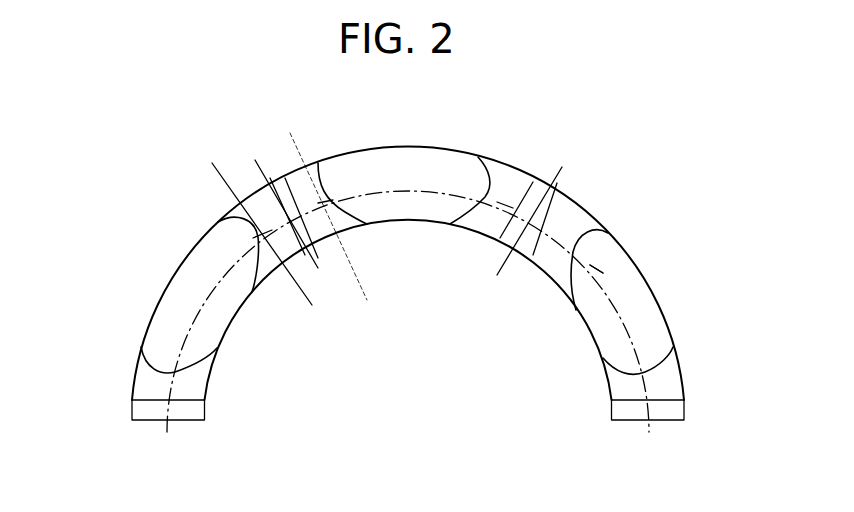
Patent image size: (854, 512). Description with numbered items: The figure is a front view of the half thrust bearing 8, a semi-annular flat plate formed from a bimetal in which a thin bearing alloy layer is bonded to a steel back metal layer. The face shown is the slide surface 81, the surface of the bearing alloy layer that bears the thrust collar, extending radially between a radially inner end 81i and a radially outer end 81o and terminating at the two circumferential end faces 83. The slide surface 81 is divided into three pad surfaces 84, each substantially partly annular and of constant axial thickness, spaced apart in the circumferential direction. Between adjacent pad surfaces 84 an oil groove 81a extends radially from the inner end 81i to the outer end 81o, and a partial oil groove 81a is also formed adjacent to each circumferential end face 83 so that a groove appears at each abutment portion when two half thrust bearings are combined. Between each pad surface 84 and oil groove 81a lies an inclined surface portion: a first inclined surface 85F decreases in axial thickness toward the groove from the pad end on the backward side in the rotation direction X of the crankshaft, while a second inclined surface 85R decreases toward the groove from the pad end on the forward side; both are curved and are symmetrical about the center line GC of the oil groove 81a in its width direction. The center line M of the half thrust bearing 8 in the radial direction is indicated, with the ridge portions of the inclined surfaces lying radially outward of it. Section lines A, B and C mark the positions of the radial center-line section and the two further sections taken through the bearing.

The half thrust bearing 8 is at (648, 125).
The slide surface 81 is at (421, 307).
The radially outer end 81o is at (650, 286).
The radially inner end 81i is at (585, 320).
The oil groove 81a is at (345, 255).
The circumferential end face 83 is at (146, 422).
The pad surface 84 is at (397, 270).
The first inclined surface 85F is at (320, 168).
The second inclined surface 85R is at (255, 208).
The center line of the oil groove GC is at (255, 160).
The center line of the half thrust bearing in the radial direction M is at (603, 272).
The center line A- A is at (236, 277).
The line B- B is at (288, 153).
The line C- C is at (215, 187).
The rotation direction X is at (307, 334).